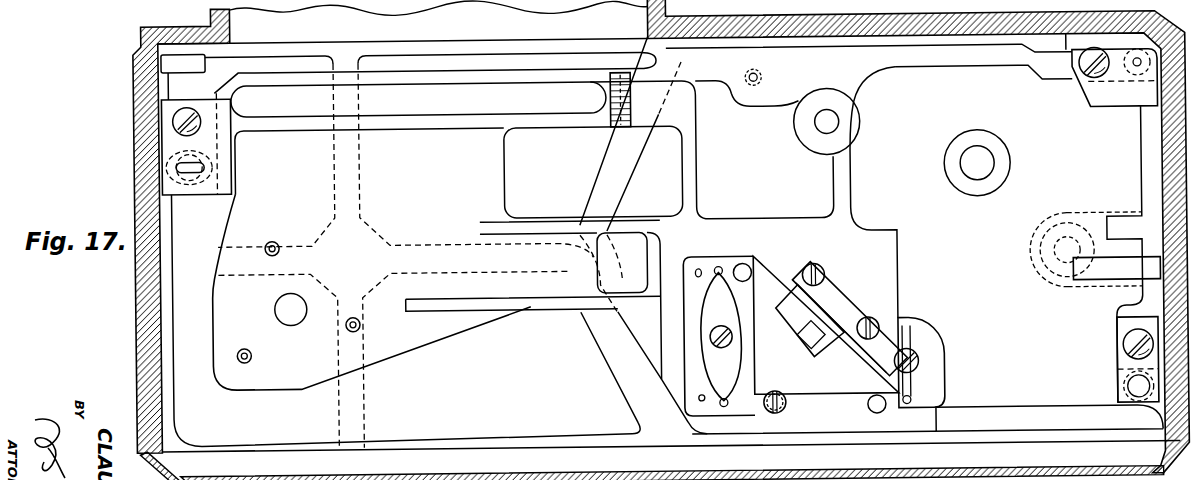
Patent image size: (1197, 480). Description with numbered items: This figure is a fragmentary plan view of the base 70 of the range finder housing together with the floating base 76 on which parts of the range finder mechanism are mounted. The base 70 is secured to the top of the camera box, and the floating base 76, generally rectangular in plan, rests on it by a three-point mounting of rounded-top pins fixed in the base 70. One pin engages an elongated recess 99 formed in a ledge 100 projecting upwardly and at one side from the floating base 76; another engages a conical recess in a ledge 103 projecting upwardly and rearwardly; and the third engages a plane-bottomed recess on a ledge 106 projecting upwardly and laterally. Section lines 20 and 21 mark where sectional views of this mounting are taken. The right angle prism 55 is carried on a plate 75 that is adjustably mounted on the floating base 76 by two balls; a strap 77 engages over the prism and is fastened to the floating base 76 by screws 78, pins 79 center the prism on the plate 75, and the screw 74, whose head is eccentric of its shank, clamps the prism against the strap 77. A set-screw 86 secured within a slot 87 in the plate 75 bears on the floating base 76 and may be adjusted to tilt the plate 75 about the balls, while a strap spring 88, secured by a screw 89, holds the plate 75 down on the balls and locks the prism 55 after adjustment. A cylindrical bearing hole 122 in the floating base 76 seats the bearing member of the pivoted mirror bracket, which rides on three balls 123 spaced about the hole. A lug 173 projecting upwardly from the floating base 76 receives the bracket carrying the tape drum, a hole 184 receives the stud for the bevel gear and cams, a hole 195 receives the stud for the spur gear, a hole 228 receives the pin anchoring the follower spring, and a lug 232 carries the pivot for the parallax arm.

The section line 20 is at (107, 172).
The section line 21 is at (1137, 44).
The right angle prism 55 is at (807, 400).
The base 70 is at (553, 441).
The screw 74 is at (778, 419).
The plate 75 is at (797, 272).
The floating base 76 is at (1027, 410).
The strap 77 is at (838, 378).
The screws 78 is at (873, 328).
The pins 79 is at (742, 270).
The set-screw 86 is at (920, 368).
The slot 87 is at (905, 334).
The strap spring 88 is at (700, 363).
The screw 89 is at (719, 333).
The elongated recess 99 is at (200, 174).
The ledge 100 is at (210, 112).
The ledge 103 is at (1090, 103).
The ledge 106 is at (1118, 371).
The bearing hole 122 is at (275, 311).
The balls 123 is at (345, 331).
The lug 173 is at (1131, 276).
The hole 184 is at (985, 171).
The hole 195 is at (823, 134).
The hole 228 is at (752, 93).
The lug 232 is at (612, 109).